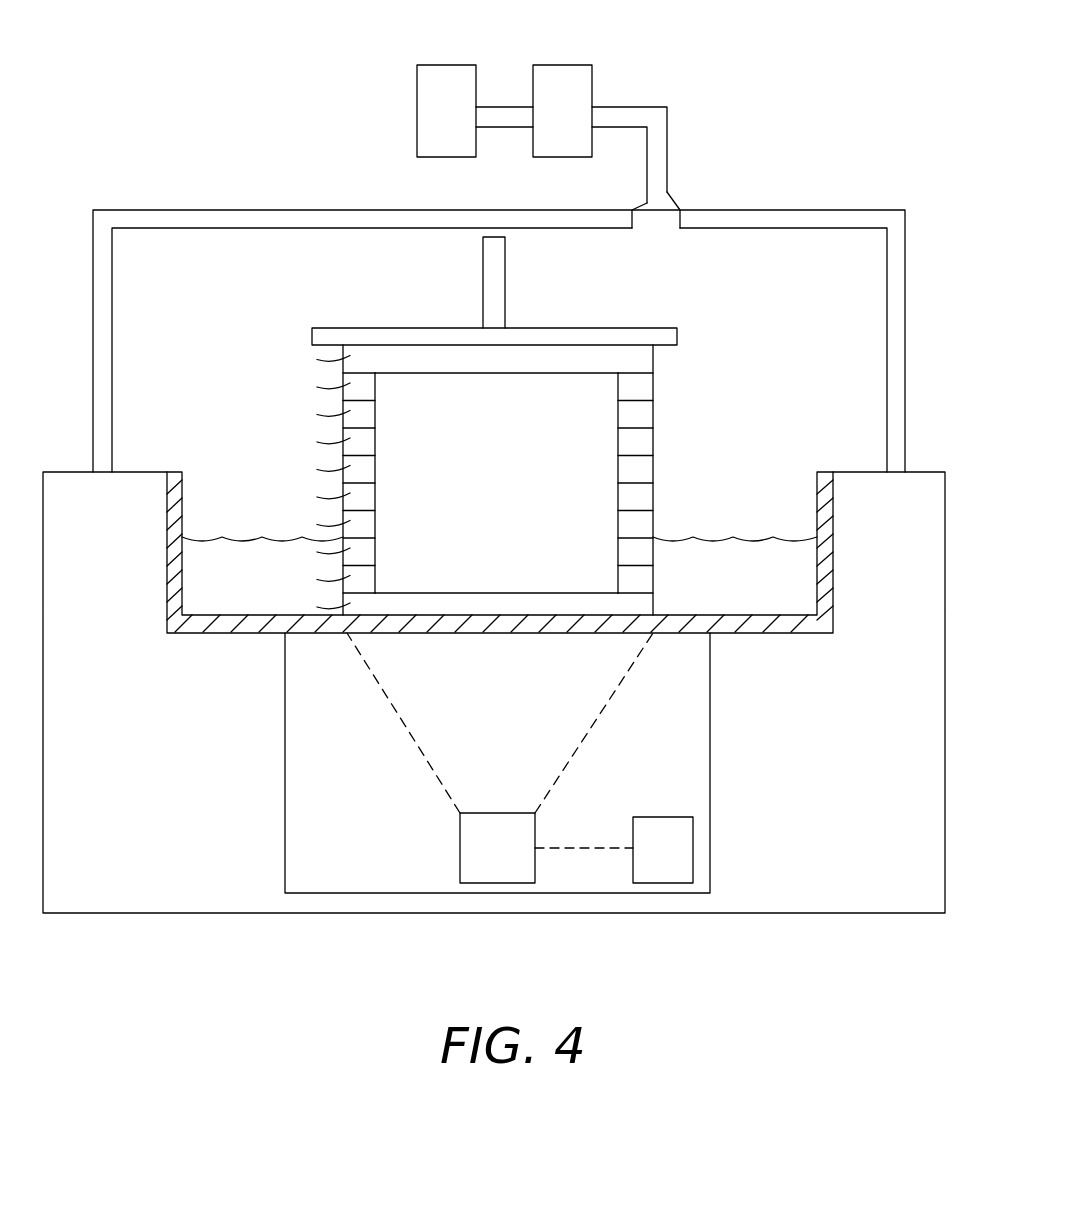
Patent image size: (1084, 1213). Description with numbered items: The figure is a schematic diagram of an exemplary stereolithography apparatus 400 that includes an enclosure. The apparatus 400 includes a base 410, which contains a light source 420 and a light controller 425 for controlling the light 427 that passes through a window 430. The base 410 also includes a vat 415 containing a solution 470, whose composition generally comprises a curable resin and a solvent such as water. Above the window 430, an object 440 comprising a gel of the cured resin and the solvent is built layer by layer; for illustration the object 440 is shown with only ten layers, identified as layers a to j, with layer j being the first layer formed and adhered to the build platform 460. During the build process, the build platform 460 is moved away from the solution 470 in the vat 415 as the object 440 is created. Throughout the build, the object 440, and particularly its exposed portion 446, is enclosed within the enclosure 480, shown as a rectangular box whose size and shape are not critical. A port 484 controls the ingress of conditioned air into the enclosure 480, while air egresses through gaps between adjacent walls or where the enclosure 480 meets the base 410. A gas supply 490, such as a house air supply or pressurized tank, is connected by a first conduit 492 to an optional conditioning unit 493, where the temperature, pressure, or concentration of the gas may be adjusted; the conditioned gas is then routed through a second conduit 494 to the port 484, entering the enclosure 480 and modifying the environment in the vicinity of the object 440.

The apparatus 400 is at (237, 153).
The base 410 is at (108, 898).
The vat 415 is at (167, 583).
The light source 420 is at (665, 830).
The light controller 425 is at (477, 850).
The light 427 is at (435, 698).
The window 430 is at (313, 634).
The object 440 is at (672, 613).
The exposed portion 446 is at (730, 530).
The build platform 460 is at (582, 337).
The solution 470 is at (243, 560).
The enclosure 480 is at (862, 262).
The port 484 is at (658, 222).
The gas supply 490 is at (447, 75).
The first conduit 492 is at (507, 115).
The conditioning unit 493 is at (565, 75).
The second conduit 494 is at (637, 115).